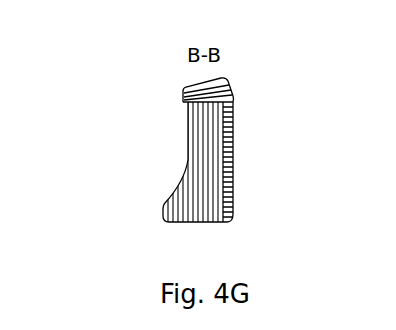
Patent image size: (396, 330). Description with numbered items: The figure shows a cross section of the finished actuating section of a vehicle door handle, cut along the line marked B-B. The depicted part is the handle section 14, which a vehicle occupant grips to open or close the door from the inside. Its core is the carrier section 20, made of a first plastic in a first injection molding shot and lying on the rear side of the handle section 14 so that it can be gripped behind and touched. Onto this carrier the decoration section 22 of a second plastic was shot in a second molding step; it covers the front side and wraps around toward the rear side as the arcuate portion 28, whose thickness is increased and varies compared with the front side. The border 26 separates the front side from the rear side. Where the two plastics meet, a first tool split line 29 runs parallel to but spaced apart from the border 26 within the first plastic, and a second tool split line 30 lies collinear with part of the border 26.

The handle section 14 is at (130, 77).
The first tool split line 29 is at (183, 93).
The carrier section 20 is at (197, 150).
The decoration section 22 is at (233, 118).
The second tool split line 30 is at (188, 242).
The arcuate portion 28 is at (224, 80).
The border 26 is at (252, 158).